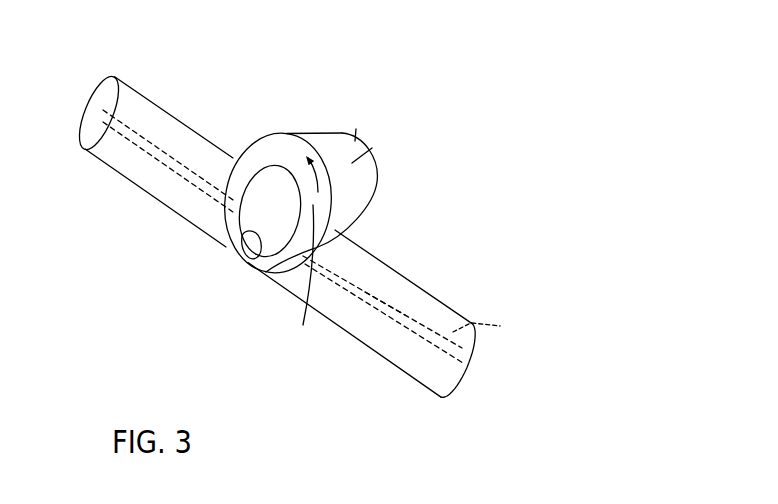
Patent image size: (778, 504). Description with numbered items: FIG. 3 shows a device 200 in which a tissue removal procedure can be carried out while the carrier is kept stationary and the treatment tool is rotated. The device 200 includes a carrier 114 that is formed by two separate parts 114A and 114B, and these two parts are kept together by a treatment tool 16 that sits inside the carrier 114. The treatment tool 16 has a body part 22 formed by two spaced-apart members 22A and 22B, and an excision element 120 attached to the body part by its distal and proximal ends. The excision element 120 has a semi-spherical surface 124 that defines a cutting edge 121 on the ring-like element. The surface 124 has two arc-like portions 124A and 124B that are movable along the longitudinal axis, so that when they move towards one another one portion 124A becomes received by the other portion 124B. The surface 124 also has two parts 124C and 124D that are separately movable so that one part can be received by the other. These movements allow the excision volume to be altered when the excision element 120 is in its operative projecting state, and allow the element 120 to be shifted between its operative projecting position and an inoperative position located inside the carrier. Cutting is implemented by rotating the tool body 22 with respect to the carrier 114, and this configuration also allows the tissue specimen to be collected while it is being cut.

The carrier 114 is at (188, 104).
The carrier part 114A is at (122, 157).
The carrier part 114B is at (472, 321).
The treatment tool 16 is at (161, 186).
The body part 22 is at (393, 303).
The spaced-apart member 22A is at (203, 177).
The spaced-apart member 22B is at (393, 303).
The excision element 120 is at (315, 106).
The tab 121 is at (252, 263).
The semi-spherical surface 124 is at (378, 201).
The arc-like portion 124A is at (280, 148).
The arc-like portion 124B is at (336, 152).
The surface part 124C is at (356, 130).
The surface part 124D is at (303, 325).
The device 200 is at (457, 103).